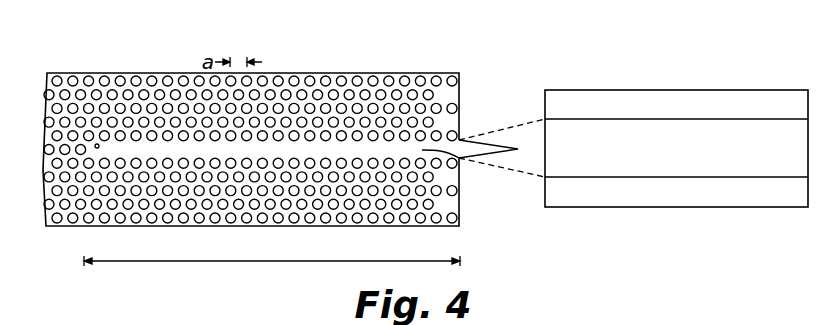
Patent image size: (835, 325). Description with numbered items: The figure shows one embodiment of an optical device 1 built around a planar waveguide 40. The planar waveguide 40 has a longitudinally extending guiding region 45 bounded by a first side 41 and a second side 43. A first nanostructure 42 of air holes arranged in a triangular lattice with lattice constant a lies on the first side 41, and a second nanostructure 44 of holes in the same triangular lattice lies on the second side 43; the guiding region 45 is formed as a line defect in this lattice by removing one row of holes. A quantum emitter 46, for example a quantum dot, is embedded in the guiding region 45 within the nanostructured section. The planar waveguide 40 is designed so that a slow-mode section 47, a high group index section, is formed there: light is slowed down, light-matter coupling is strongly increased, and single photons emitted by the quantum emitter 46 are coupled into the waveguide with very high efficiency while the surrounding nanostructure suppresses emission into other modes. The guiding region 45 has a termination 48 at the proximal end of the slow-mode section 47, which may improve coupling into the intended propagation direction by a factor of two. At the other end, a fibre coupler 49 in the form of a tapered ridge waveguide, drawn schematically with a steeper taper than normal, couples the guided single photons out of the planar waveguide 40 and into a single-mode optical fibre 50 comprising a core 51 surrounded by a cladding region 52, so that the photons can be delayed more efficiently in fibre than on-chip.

The optical device 1 is at (352, 49).
The planar waveguide 40 is at (275, 74).
The first side 41 is at (113, 138).
The first nanostructure 42 is at (116, 77).
The second side 43 is at (121, 156).
The second nanostructure 44 is at (118, 223).
The guiding region 45 is at (462, 158).
The quantum emitter 46 is at (95, 145).
The slow-mode section 47 is at (272, 251).
The termination 48 is at (83, 149).
The fibre coupler 49 is at (463, 145).
The optical fibre 50 is at (723, 91).
The core of optical fibre 51 is at (680, 160).
The cladding of optical fibre 52 is at (632, 118).